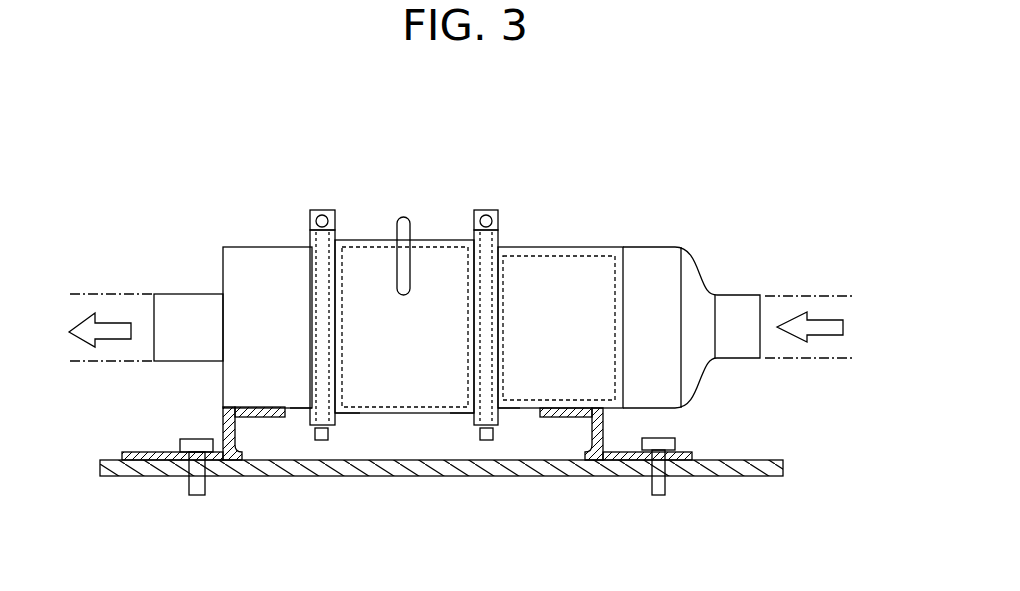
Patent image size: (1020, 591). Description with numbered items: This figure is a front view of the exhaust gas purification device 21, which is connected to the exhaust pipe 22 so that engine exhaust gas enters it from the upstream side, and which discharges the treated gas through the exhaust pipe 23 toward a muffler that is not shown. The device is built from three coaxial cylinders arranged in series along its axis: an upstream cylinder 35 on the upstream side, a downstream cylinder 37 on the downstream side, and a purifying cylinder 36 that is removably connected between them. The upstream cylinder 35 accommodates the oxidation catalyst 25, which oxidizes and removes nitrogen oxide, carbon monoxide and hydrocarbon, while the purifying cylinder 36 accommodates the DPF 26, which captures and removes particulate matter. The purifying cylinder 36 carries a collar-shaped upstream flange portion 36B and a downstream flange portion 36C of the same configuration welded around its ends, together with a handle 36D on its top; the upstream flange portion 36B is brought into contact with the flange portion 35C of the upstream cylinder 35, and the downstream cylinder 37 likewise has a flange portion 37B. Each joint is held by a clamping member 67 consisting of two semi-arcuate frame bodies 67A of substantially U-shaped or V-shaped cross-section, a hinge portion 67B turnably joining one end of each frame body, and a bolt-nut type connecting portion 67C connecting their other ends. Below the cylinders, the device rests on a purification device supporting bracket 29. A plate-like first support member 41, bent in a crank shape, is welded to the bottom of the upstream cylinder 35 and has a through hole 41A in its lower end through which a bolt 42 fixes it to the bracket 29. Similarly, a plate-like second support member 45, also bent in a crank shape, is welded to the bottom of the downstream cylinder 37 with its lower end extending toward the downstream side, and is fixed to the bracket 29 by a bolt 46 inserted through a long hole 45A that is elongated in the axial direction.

The exhaust gas purification device 21 is at (563, 149).
The exhaust pipe 22 is at (815, 295).
The exhaust pipe 23 is at (72, 293).
The oxidation catalyst 25 is at (576, 252).
The DPF 26 is at (366, 268).
The purification device supporting bracket 29 is at (402, 468).
The upstream cylinder 35 is at (613, 240).
The flange portion 35C is at (500, 417).
The purifying cylinder 36 is at (428, 228).
The upstream flange portion 36B is at (473, 417).
The downstream flange portion 36C is at (343, 418).
The handle 36D is at (400, 218).
The downstream cylinder 37 is at (236, 242).
The flange portion 37B is at (303, 420).
The first support member 41 is at (594, 438).
The through hole 41A is at (657, 486).
The bolt 42 is at (662, 441).
The second support member 45 is at (238, 458).
The long hole 45A is at (165, 455).
The bolt 46 is at (197, 440).
The clamping member 67 is at (310, 240).
The frame body 67A is at (310, 275).
The hinge portion 67B is at (322, 441).
The connecting portion 67C is at (322, 214).